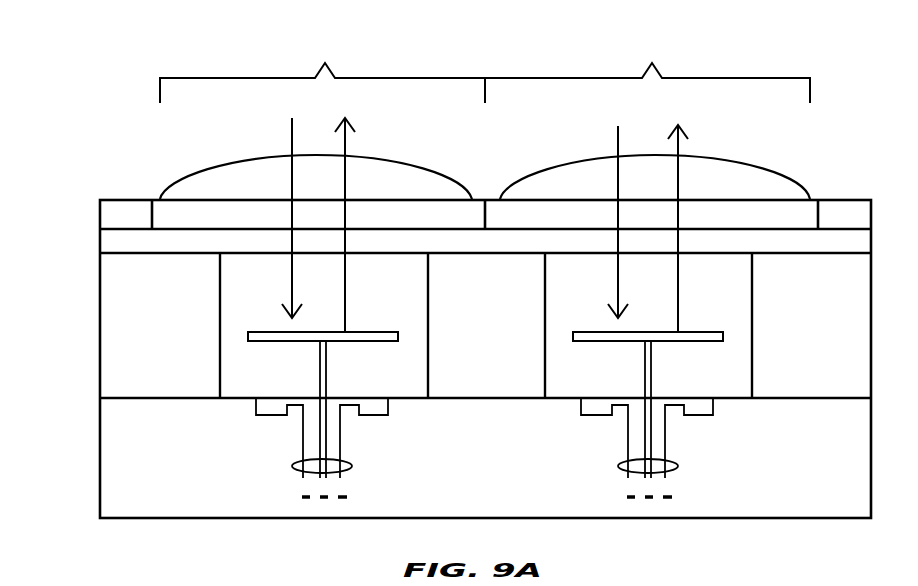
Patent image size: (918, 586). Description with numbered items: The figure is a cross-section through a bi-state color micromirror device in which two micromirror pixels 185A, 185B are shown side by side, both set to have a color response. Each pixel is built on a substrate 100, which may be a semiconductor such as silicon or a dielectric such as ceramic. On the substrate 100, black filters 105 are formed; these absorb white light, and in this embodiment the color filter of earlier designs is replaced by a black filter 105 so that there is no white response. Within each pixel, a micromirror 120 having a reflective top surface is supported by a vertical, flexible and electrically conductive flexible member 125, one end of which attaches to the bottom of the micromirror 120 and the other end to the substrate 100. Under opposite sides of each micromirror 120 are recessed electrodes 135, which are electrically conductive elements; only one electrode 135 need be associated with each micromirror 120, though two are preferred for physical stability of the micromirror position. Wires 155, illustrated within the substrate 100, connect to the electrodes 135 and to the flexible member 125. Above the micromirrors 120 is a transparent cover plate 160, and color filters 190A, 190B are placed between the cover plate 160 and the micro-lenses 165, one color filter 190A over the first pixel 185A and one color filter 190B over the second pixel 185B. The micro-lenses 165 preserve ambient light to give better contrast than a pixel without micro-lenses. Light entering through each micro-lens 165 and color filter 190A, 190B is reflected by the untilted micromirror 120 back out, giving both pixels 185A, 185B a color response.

The substrate 100 is at (849, 511).
The black filter 105 is at (168, 339).
The micromirror 120 is at (264, 331).
The flexible member 125 is at (324, 370).
The electrode 135 is at (272, 406).
The wire 155 is at (352, 466).
The cover plate 160 is at (117, 245).
The micro-lens 165 is at (236, 195).
The micromirror pixel 185A is at (322, 71).
The micromirror pixel 185B is at (647, 71).
The color filter 190A is at (186, 214).
The color filter 190B is at (651, 214).